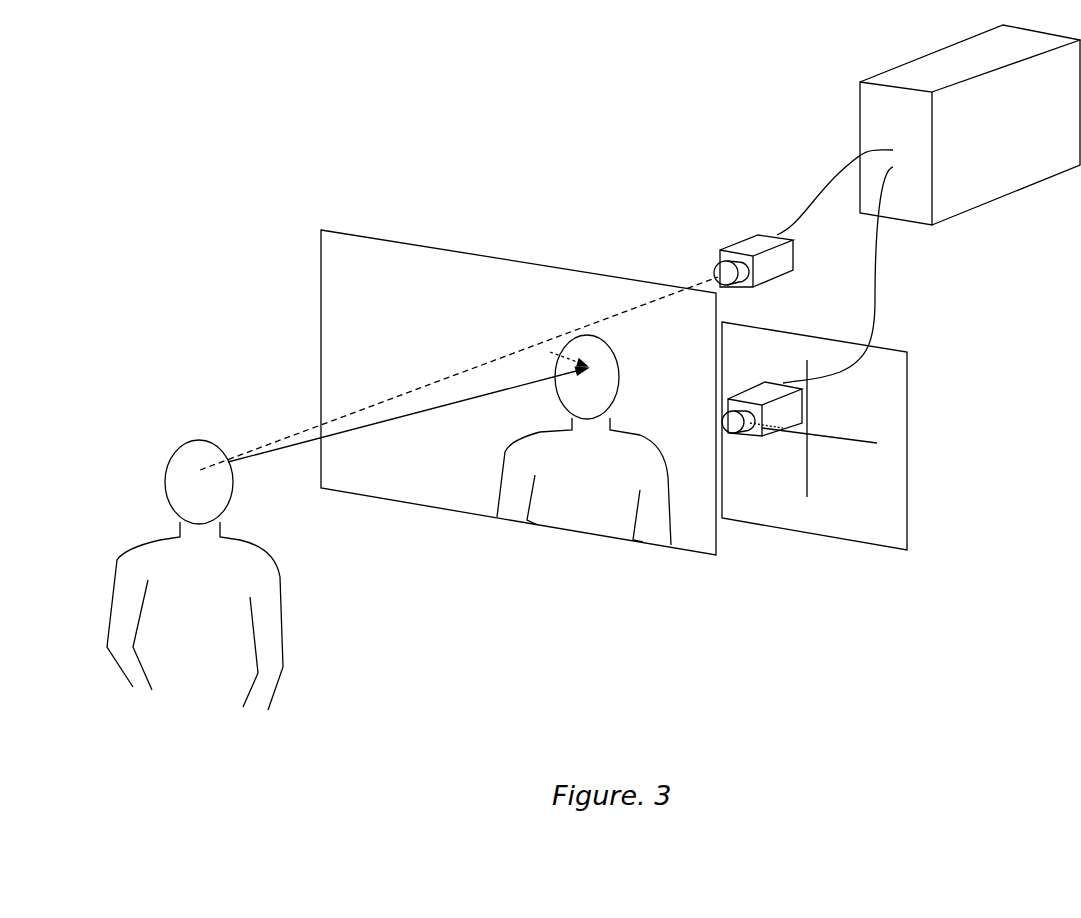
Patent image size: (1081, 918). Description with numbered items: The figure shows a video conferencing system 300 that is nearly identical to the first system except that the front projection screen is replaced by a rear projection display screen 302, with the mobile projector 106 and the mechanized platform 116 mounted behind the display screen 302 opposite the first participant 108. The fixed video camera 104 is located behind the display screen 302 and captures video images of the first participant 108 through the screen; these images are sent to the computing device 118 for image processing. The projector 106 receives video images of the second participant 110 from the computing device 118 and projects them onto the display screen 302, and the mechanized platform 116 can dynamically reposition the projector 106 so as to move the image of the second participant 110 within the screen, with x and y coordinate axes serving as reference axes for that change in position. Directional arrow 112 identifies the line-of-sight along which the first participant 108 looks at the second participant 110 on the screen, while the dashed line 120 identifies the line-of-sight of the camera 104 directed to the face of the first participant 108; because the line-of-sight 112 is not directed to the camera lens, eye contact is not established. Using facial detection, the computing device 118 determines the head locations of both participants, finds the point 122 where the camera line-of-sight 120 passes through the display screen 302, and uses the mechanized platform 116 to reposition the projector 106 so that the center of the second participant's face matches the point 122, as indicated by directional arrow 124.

The video conferencing system 300 is at (235, 142).
The rear projection display screen 302 is at (320, 284).
The fixed video camera 104 is at (752, 245).
The mobile projector 106 is at (765, 385).
The first participant 108 is at (225, 649).
The second participant 110 is at (603, 504).
The line-of-sight directional arrow 112 is at (277, 452).
The mechanized platform 116 is at (907, 390).
The computing device 118 is at (1024, 181).
The camera line-of-sight 120 is at (700, 280).
The point 122 is at (548, 350).
The directional arrow 124 is at (553, 355).